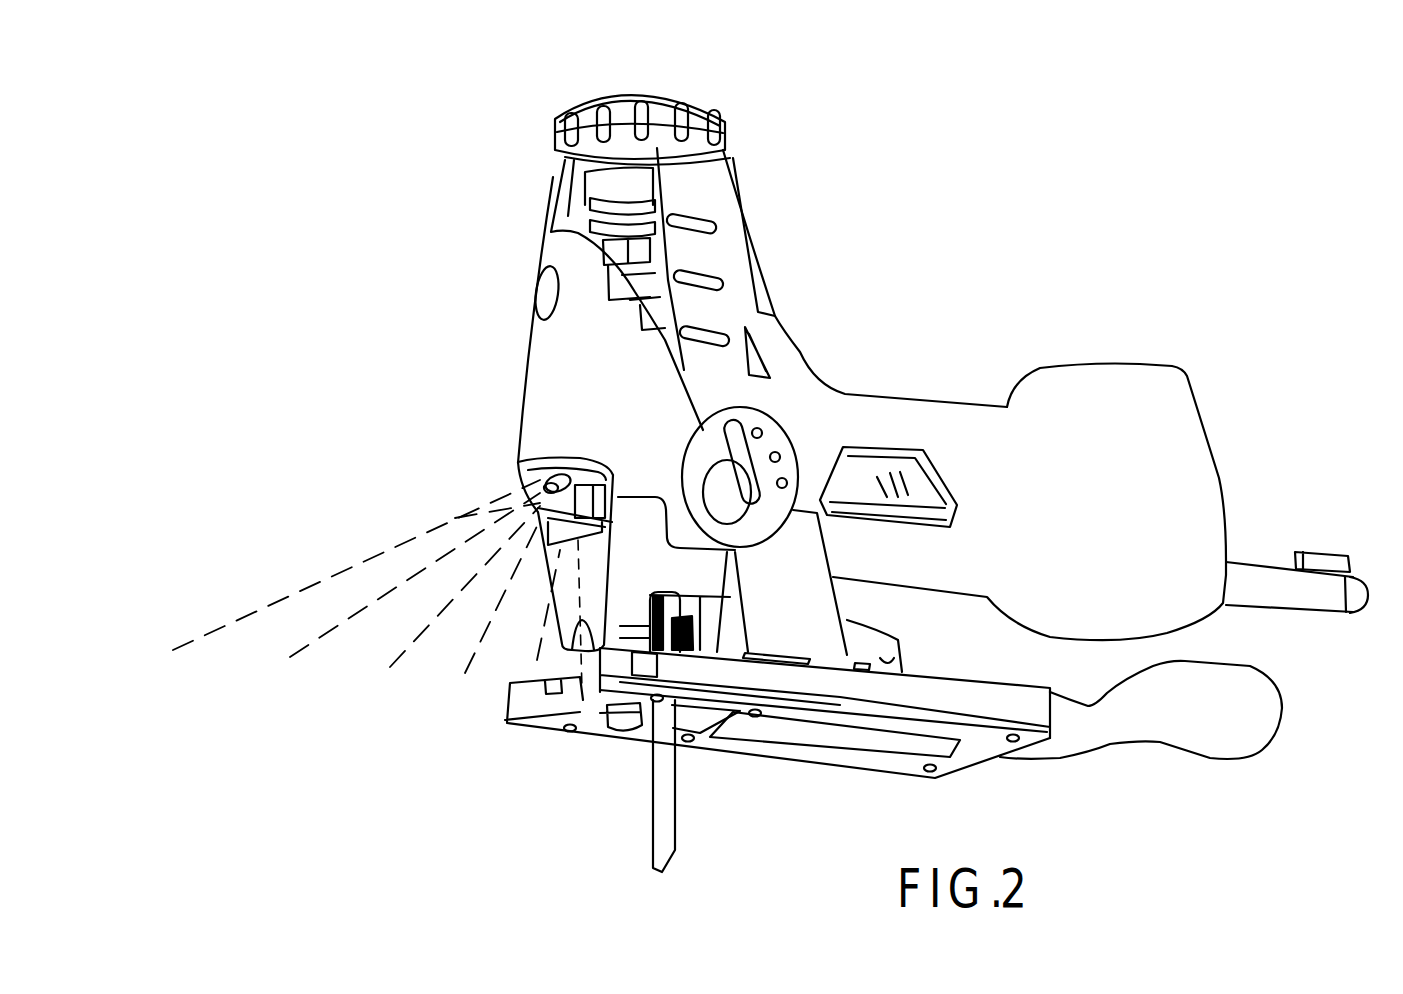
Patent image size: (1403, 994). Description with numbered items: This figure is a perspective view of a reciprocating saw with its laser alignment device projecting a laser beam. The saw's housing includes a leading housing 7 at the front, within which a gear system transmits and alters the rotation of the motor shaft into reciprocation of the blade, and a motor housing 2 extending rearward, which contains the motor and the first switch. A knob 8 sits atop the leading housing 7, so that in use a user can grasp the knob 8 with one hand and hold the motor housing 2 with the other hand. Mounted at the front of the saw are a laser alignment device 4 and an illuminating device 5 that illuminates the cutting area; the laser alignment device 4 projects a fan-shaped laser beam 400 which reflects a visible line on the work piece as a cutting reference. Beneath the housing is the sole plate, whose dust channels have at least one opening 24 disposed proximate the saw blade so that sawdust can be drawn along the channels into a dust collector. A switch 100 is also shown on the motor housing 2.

The motor housing 2 is at (975, 435).
The laser alignment device 4 is at (540, 484).
The illuminating device 5 is at (560, 505).
The leading housing 7 is at (764, 214).
The knob 8 is at (578, 108).
The opening 24 is at (624, 730).
The switch 100 is at (887, 452).
The laser beam 400 is at (312, 583).